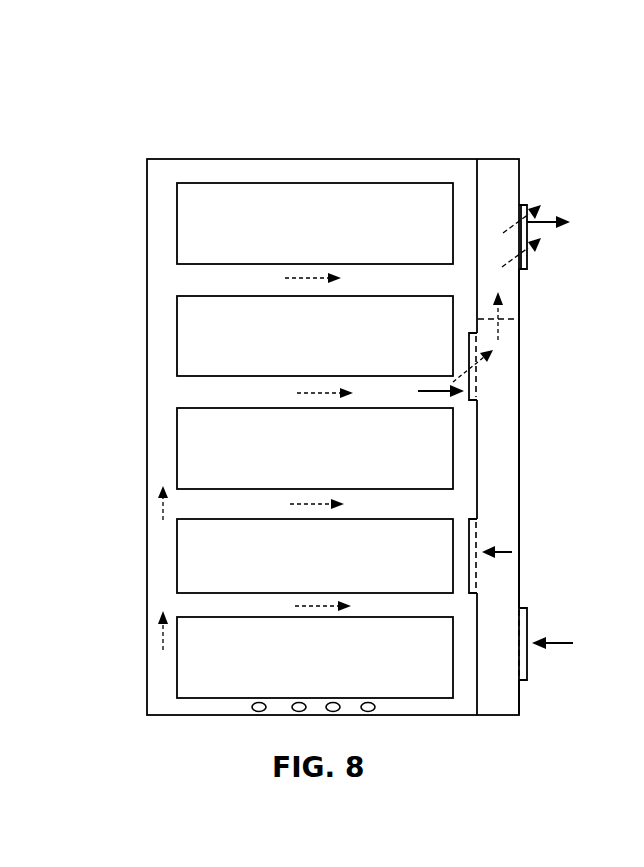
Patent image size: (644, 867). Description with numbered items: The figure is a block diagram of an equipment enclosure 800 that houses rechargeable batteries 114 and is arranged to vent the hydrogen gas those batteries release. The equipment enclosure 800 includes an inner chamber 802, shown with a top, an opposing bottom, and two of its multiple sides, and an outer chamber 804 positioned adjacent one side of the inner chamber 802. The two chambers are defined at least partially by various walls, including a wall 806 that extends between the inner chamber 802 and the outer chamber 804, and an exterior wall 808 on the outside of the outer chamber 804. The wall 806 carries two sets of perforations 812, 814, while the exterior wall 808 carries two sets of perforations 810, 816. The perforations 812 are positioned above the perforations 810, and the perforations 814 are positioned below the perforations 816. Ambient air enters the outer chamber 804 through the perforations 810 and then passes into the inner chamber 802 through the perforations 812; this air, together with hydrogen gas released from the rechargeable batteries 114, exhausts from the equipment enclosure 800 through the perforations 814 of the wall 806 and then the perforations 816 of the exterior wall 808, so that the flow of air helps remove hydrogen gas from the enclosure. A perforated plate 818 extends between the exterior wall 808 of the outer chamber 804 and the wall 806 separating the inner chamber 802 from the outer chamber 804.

The equipment enclosure 800 is at (530, 75).
The inner chamber 802 is at (159, 297).
The outer chamber 804 is at (493, 170).
The wall 806 is at (479, 433).
The exterior wall 808 is at (520, 492).
The perforations 810 is at (520, 626).
The perforations 812 is at (478, 577).
The perforations 814 is at (478, 387).
The perforations 816 is at (521, 219).
The perforated plate 818 is at (516, 322).
The rechargeable batteries 114 is at (336, 347).